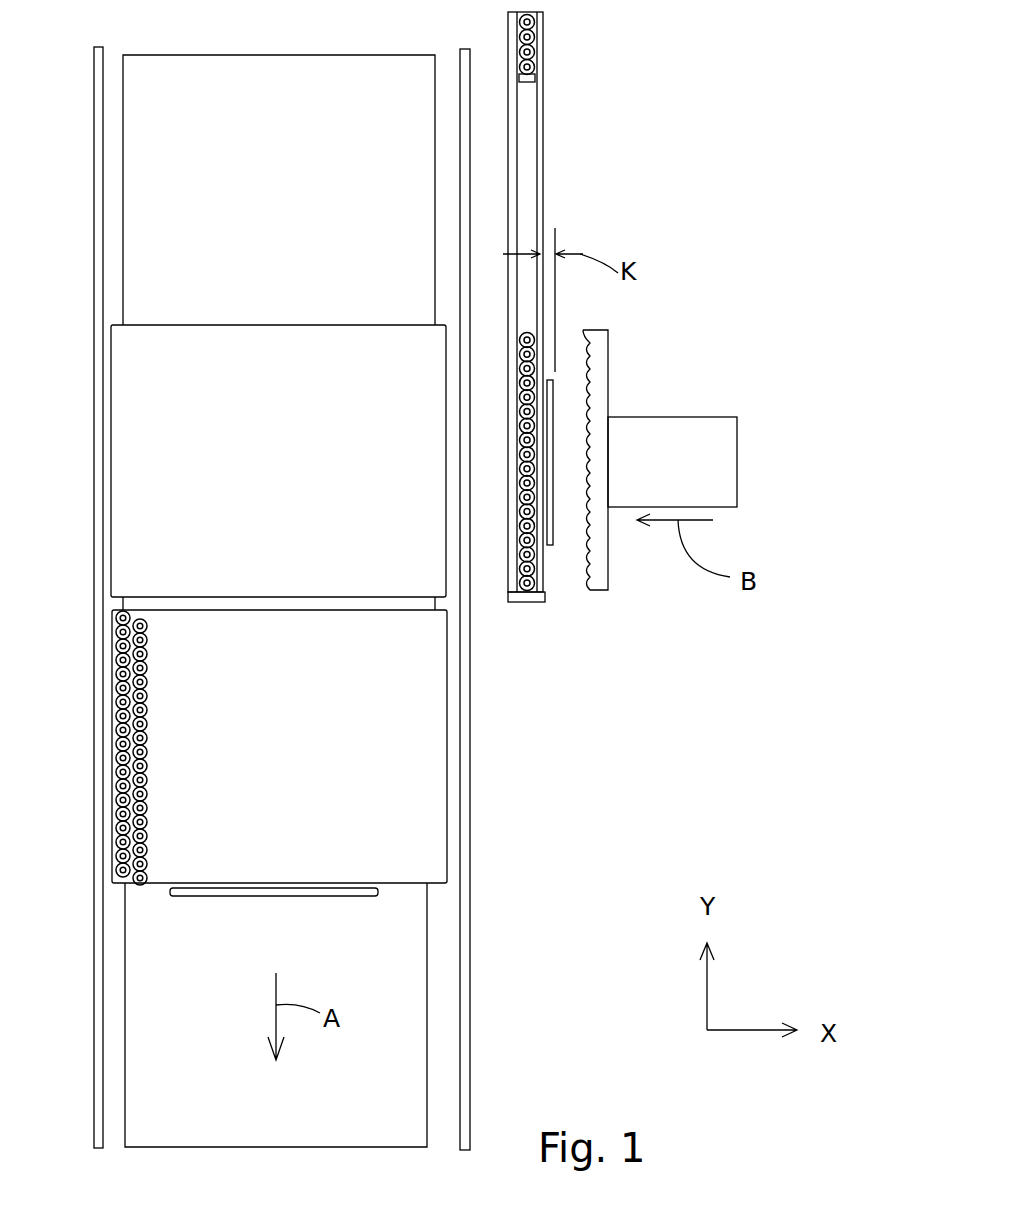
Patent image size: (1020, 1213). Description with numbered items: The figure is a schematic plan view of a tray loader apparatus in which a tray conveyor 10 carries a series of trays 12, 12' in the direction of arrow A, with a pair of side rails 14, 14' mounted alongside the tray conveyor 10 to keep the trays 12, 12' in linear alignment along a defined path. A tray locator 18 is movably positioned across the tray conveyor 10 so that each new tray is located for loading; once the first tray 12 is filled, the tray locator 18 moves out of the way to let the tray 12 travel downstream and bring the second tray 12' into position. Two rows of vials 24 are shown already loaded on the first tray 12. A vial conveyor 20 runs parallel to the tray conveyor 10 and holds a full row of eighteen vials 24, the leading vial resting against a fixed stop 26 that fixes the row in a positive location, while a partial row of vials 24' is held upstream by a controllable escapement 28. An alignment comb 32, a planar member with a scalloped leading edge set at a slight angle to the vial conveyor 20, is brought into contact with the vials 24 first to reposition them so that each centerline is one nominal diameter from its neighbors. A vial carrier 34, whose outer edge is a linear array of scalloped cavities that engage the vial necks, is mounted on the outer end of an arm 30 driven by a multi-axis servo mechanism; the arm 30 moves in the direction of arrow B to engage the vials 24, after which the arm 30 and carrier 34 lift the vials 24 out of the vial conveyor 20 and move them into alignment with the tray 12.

The tray conveyor 10 is at (298, 193).
The second tray 12' is at (278, 461).
The first tray 12 is at (279, 746).
The side rail 14 is at (497, 599).
The side rail 14' is at (69, 597).
The tray locator 18 is at (275, 897).
The vial conveyor 20 is at (545, 192).
The vials 24 is at (363, 583).
The partial row of vials 24' is at (579, 43).
The controllable escapement 28 is at (535, 85).
The fixed stop 26 is at (533, 602).
The arm 30 is at (670, 417).
The alignment comb 32 is at (548, 550).
The vial carrier 34 is at (597, 590).